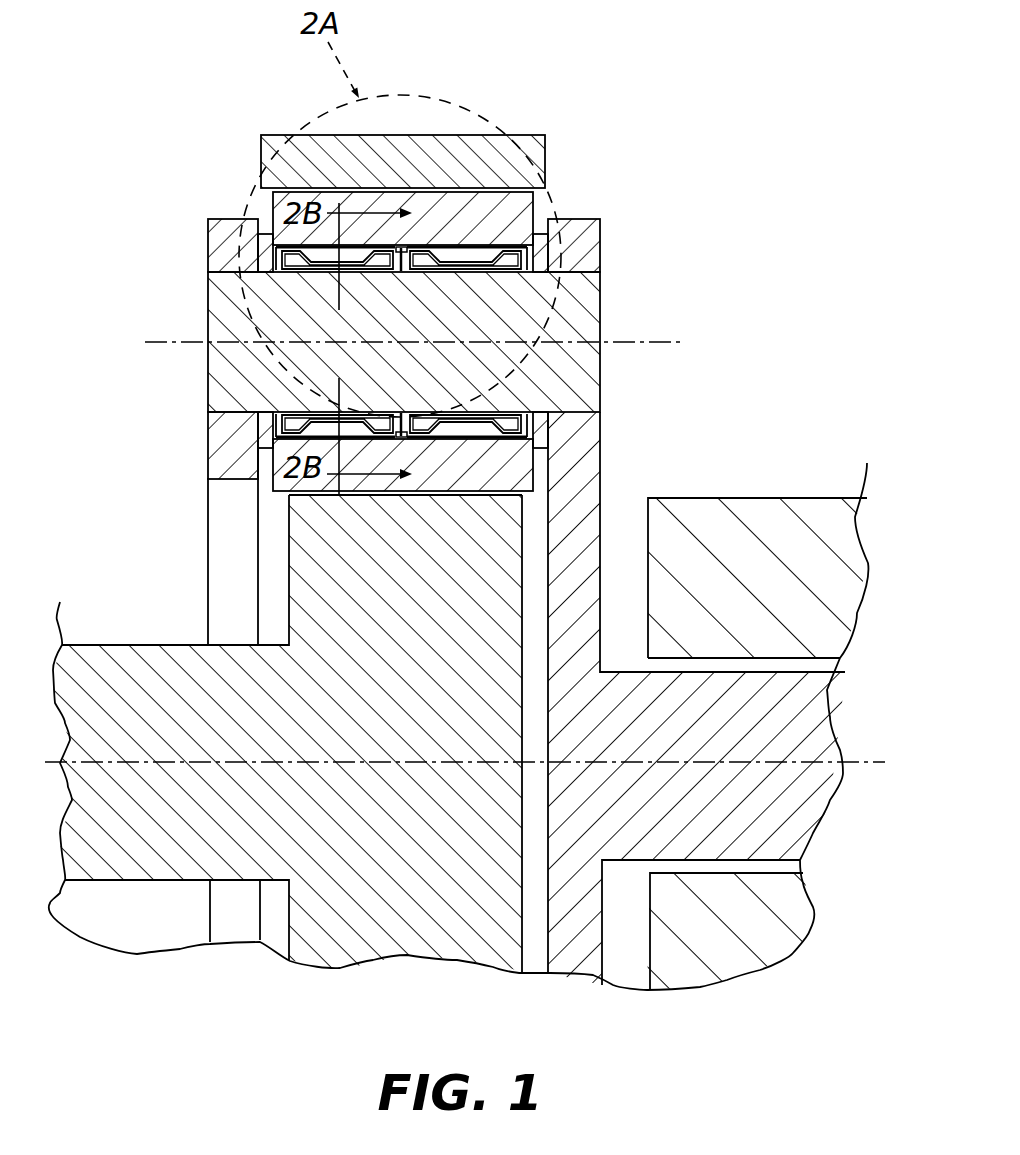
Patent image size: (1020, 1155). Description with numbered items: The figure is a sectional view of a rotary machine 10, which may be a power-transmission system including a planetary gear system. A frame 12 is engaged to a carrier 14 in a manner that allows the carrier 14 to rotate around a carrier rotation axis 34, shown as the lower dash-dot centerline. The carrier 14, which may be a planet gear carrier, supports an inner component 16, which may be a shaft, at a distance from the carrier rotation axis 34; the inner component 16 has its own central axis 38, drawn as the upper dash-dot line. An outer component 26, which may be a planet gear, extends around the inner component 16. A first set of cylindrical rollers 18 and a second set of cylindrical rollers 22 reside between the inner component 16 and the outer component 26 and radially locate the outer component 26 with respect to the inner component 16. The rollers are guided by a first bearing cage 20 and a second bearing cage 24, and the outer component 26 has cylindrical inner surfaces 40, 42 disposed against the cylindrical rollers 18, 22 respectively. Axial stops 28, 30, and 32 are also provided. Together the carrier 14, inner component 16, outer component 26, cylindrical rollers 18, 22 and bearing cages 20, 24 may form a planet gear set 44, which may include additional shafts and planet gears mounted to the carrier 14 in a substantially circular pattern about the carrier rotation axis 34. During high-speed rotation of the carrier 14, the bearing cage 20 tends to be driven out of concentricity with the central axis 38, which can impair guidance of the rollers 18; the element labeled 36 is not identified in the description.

The rotary machine 10 is at (415, 247).
The frame 12 is at (753, 510).
The carrier 14 is at (600, 438).
The inner component 16 is at (600, 304).
The first set of cylindrical rollers 18 is at (298, 268).
The first bearing cage 20 is at (290, 245).
The second set of cylindrical rollers 22 is at (483, 250).
The second bearing cage 24 is at (495, 242).
The outer component 26 is at (427, 203).
The axial stop 28 is at (400, 245).
The axial stop 30 is at (292, 266).
The axial stop 32 is at (585, 268).
The carrier rotation axis 34 is at (866, 768).
The spacer ring 36 is at (316, 272).
The central axis 38 is at (620, 343).
The cylindrical inner surface 40 is at (274, 168).
The cylindrical inner surface 42 is at (504, 168).
The planet gear set 44 is at (680, 160).